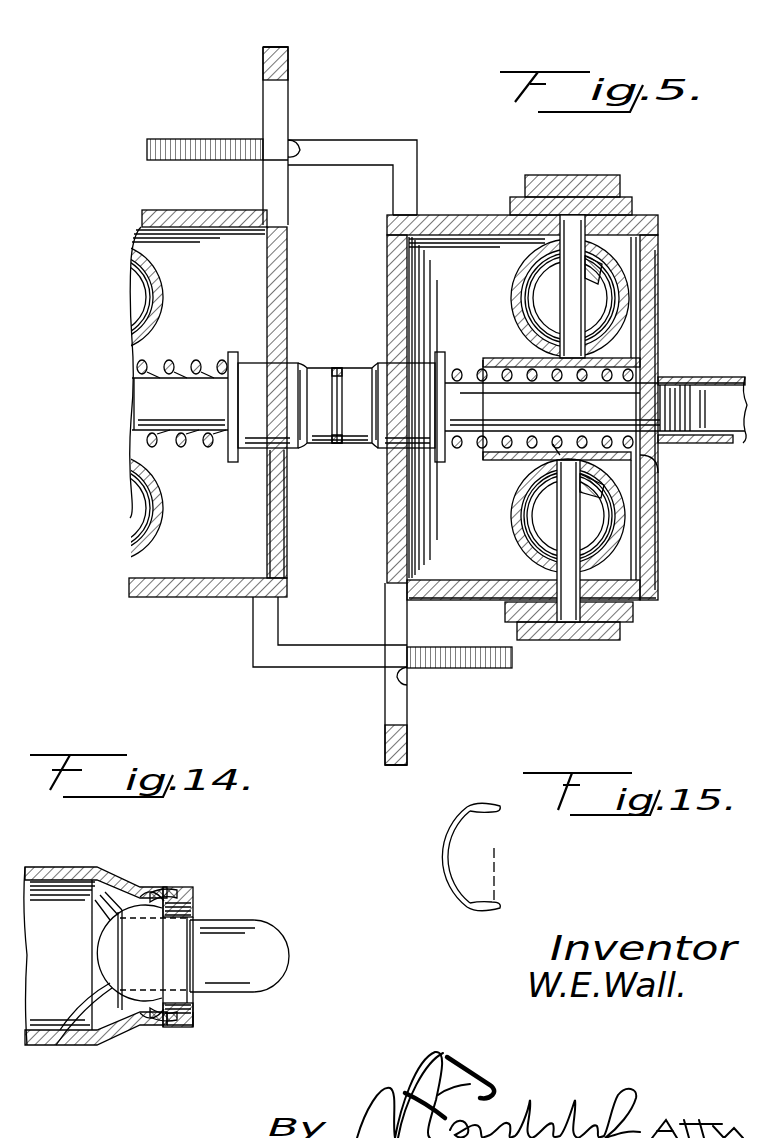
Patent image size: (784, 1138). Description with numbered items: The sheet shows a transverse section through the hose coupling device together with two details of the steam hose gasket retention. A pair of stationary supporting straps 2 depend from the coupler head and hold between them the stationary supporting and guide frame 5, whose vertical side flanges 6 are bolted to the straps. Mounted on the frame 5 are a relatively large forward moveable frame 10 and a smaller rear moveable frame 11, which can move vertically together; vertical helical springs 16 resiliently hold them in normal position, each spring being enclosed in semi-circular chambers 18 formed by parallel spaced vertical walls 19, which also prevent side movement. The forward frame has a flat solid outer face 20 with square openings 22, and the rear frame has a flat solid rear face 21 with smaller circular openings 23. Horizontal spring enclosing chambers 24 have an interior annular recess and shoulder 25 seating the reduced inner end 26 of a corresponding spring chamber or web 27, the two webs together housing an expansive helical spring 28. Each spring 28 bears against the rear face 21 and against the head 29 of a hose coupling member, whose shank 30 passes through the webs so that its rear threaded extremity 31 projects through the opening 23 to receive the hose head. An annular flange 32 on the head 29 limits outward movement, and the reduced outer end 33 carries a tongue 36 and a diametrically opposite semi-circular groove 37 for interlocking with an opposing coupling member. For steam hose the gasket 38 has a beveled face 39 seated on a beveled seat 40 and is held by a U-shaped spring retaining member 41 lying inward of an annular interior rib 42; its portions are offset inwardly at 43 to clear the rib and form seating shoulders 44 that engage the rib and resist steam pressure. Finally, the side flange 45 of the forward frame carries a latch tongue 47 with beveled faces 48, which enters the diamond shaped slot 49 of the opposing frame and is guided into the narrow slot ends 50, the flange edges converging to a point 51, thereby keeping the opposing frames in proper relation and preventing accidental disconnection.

In FIG. 5, the stationary supporting straps 2 is at (583, 175).
In FIG. 5, the stationary supporting and guide frame 5 is at (660, 243).
In FIG. 5, the vertical side flanges 6 is at (510, 205).
In FIG. 5, the forward moveable frame 10 is at (108, 575).
In FIG. 5, the rear moveable frame 11 is at (640, 275).
In FIG. 5, the vertical helical springs 16 is at (140, 312).
In FIG. 5, the semi-circular chambers 18 is at (610, 323).
In FIG. 5, the parallel spaced vertical walls 19 is at (162, 300).
In FIG. 5, the flat solid outer face 20 is at (287, 541).
In FIG. 5, the flat solid rear face 21 is at (660, 588).
In FIG. 5, the square openings 22 is at (362, 448).
In FIG. 5, the circular openings 23 is at (690, 443).
In FIG. 5, the horizontal spring enclosing chambers 24 is at (512, 487).
In FIG. 5, the interior annular recess and shoulder 25 is at (540, 452).
In FIG. 5, the reduced inner end 26 is at (562, 455).
In FIG. 5, the spring chamber or web 27 is at (660, 470).
In FIG. 5, the expansive helical springs 28 is at (140, 445).
In FIG. 5, the head of hose coupling member 29 is at (262, 378).
In FIG. 14, the head of hose coupling member 29 is at (58, 866).
In FIG. 5, the shank 30 is at (145, 393).
In FIG. 5, the rear threaded extremity 31 is at (690, 377).
In FIG. 5, the annular flange 32 is at (233, 350).
In FIG. 5, the reduced outer end 33 is at (318, 378).
In FIG. 14, the reduced outer end 33 is at (143, 888).
In FIG. 5, the tongue 36 is at (340, 368).
In FIG. 14, the tongue 36 is at (258, 956).
In FIG. 5, the semi-circular groove 37 is at (314, 450).
In FIG. 14, the gasket 38 is at (195, 900).
In FIG. 14, the beveled face 39 is at (165, 1027).
In FIG. 14, the beveled seat 40 is at (160, 1027).
In FIG. 14, the spring retaining member 41 is at (60, 1040).
In FIG. 15, the spring retaining member 41 is at (447, 880).
In FIG. 14, the annular interior rib 42 is at (175, 893).
In FIG. 14, the inwardly offset portions 43 is at (148, 1002).
In FIG. 15, the inwardly offset portions 43 is at (496, 815).
In FIG. 14, the seating shoulders 44 is at (160, 892).
In FIG. 15, the seating shoulders 44 is at (480, 800).
In FIG. 5, the side flange 45 is at (417, 185).
In FIG. 5, the latch tongue 47 is at (260, 152).
In FIG. 5, the beveled faces 48 is at (166, 132).
In FIG. 5, the diamond shaped slot 49 is at (278, 92).
In FIG. 5, the ends of narrow vertical slot 50 is at (300, 145).
In FIG. 5, the point 51 is at (290, 47).